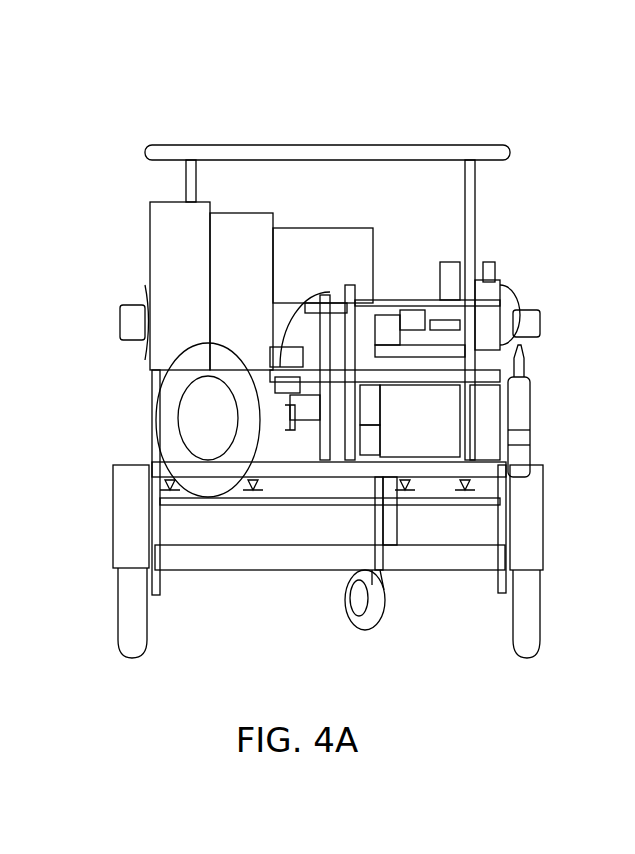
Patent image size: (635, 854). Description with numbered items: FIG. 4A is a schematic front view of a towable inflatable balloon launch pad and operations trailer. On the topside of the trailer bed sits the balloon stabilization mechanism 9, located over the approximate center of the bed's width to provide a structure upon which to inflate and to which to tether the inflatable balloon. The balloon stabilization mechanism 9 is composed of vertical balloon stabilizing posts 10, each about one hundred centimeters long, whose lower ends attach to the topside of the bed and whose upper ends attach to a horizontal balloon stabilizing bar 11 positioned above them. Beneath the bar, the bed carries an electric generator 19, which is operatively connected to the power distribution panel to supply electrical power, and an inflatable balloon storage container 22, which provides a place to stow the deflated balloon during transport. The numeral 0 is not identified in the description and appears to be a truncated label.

The balloon stabilization mechanism 9 is at (307, 122).
The vertical balloon stabilizing post 10 is at (458, 175).
The horizontal balloon stabilizing bar 11 is at (500, 152).
The electric generator 19 is at (222, 252).
The housing 0 is at (165, 252).
The inflatable balloon storage container 22 is at (330, 253).